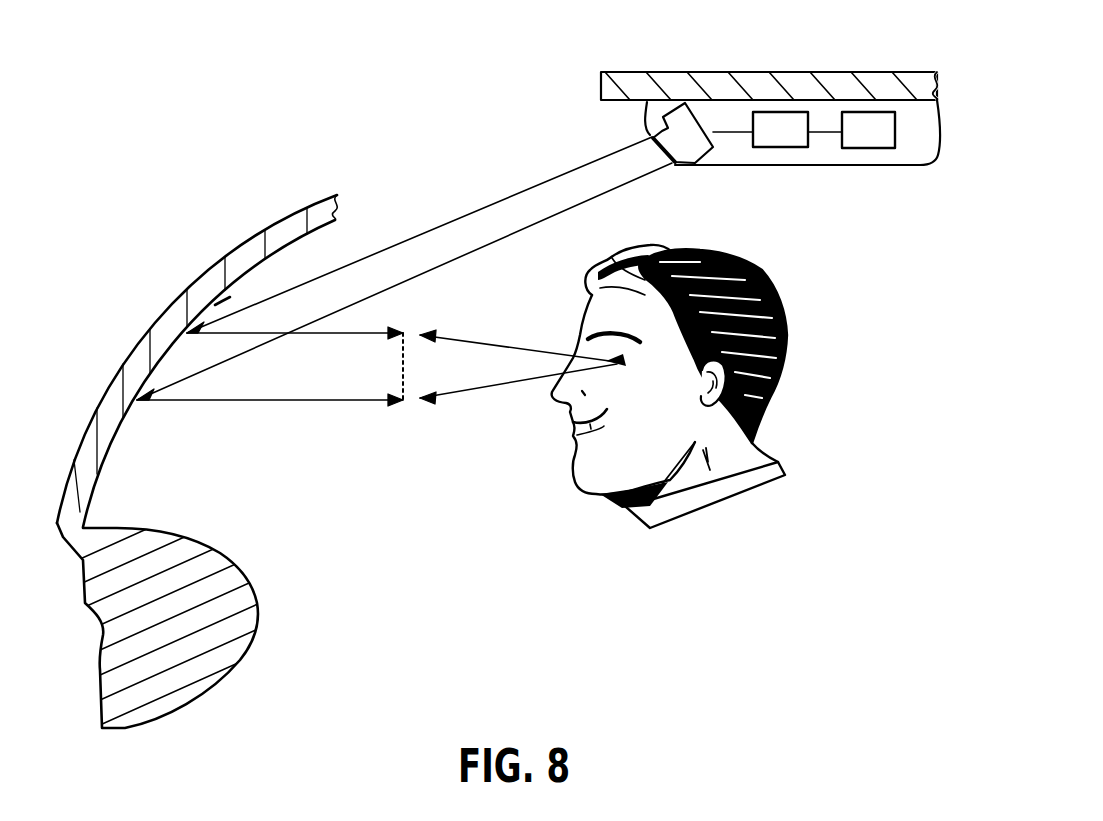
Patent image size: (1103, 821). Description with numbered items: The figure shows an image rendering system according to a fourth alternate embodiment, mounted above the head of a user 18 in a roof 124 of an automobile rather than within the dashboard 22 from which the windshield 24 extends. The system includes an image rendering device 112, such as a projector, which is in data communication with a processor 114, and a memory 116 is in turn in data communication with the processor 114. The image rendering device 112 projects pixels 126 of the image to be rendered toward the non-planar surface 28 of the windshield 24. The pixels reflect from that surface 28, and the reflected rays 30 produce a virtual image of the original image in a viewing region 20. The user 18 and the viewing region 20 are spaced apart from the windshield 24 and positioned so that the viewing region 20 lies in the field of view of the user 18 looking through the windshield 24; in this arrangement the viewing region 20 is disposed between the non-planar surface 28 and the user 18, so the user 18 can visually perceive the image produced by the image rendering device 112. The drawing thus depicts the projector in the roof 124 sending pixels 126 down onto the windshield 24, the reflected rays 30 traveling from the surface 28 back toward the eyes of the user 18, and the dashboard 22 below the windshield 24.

The user 18 is at (800, 298).
The viewing region 20 is at (399, 372).
The dashboard 22 is at (223, 552).
The windshield 24 is at (345, 199).
The non-planar surface 28 is at (257, 277).
The rays 30 is at (276, 356).
The image rendering device 112 is at (713, 150).
The processor 114 is at (780, 149).
The memory 116 is at (853, 150).
The roof 124 is at (933, 90).
The pixels 126 is at (494, 225).